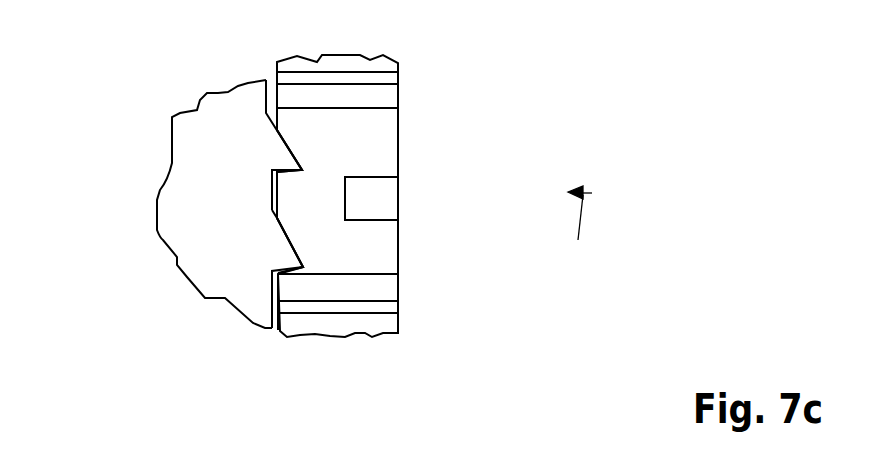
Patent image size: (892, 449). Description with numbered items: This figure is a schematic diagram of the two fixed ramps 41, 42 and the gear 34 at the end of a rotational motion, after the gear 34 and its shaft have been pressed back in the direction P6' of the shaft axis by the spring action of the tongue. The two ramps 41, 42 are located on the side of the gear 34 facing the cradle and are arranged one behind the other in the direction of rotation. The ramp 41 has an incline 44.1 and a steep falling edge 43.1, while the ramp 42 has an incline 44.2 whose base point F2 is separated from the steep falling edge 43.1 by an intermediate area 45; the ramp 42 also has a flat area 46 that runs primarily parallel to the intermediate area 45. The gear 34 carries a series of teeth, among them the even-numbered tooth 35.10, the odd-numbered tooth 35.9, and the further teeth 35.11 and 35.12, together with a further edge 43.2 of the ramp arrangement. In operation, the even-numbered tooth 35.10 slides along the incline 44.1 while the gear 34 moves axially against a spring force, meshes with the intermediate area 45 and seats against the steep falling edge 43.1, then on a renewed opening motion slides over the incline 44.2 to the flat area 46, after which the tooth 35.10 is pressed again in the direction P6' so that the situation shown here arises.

The gear 34 is at (274, 44).
The odd-numbered tooth 35.9 is at (422, 0).
The upper layer band 35.12 is at (383, 98).
The recess 35.11 is at (380, 202).
The even-numbered tooth 35.10 is at (362, 307).
The incline 44.1 is at (293, 150).
The incline 44.2 is at (303, 253).
The steep falling edge 43.1 is at (386, 185).
The lower notch 43.2 is at (288, 274).
The ramp 41 is at (280, 158).
The ramp 42 is at (278, 255).
The intermediate area 45 is at (270, 194).
The flat area 46 is at (318, 274).
The base point F2 is at (268, 216).
The direction of the shaft axis P6' is at (586, 235).